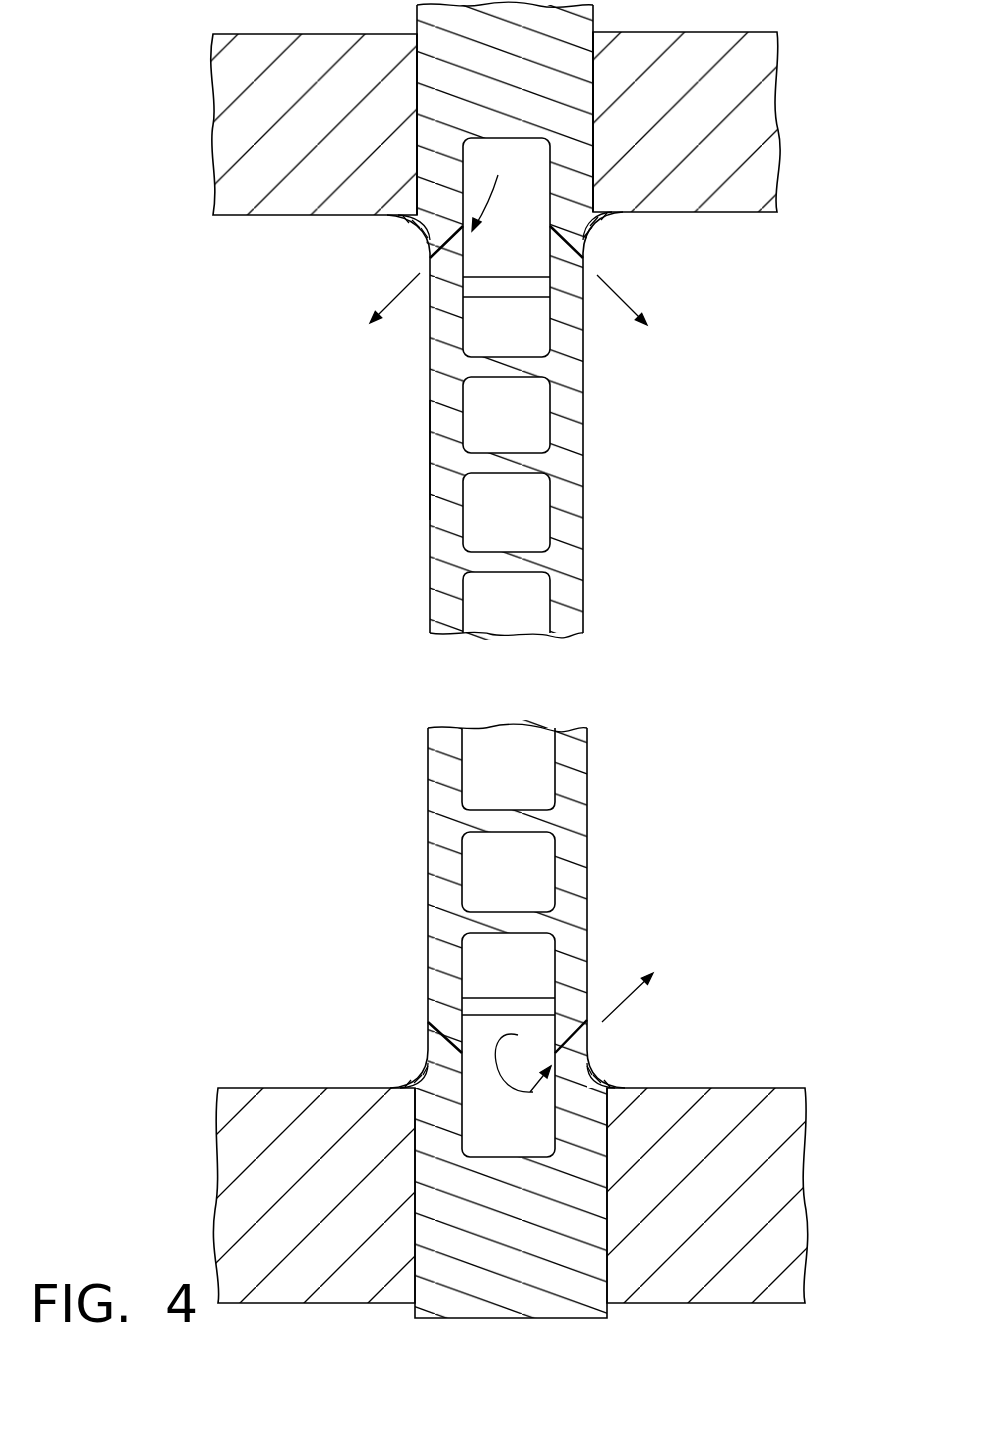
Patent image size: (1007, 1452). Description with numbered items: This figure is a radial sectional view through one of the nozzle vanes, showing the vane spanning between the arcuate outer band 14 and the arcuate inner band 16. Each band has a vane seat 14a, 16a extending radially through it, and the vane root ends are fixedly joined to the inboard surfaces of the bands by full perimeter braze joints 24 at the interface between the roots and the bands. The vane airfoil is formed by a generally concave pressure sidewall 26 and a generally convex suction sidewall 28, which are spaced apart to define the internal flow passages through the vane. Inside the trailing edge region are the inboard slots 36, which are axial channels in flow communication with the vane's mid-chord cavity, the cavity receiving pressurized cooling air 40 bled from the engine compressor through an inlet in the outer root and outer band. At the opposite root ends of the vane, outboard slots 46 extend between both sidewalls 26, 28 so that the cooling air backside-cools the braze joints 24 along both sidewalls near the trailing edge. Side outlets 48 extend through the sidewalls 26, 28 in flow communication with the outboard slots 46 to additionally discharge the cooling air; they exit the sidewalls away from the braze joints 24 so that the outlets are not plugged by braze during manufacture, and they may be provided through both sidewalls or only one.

The outer band 14 is at (778, 148).
The vane seat 14a is at (593, 60).
The inner band 16 is at (805, 1215).
The vane seat 16a is at (415, 1262).
The braze joint 24 is at (403, 218).
The pressure sidewall 26 is at (585, 440).
The suction sidewall 28 is at (428, 452).
The inboard slot 36 is at (526, 881).
The cooling air 40 is at (523, 1056).
The outboard slot 46 is at (531, 170).
The side outlet 48 is at (585, 270).